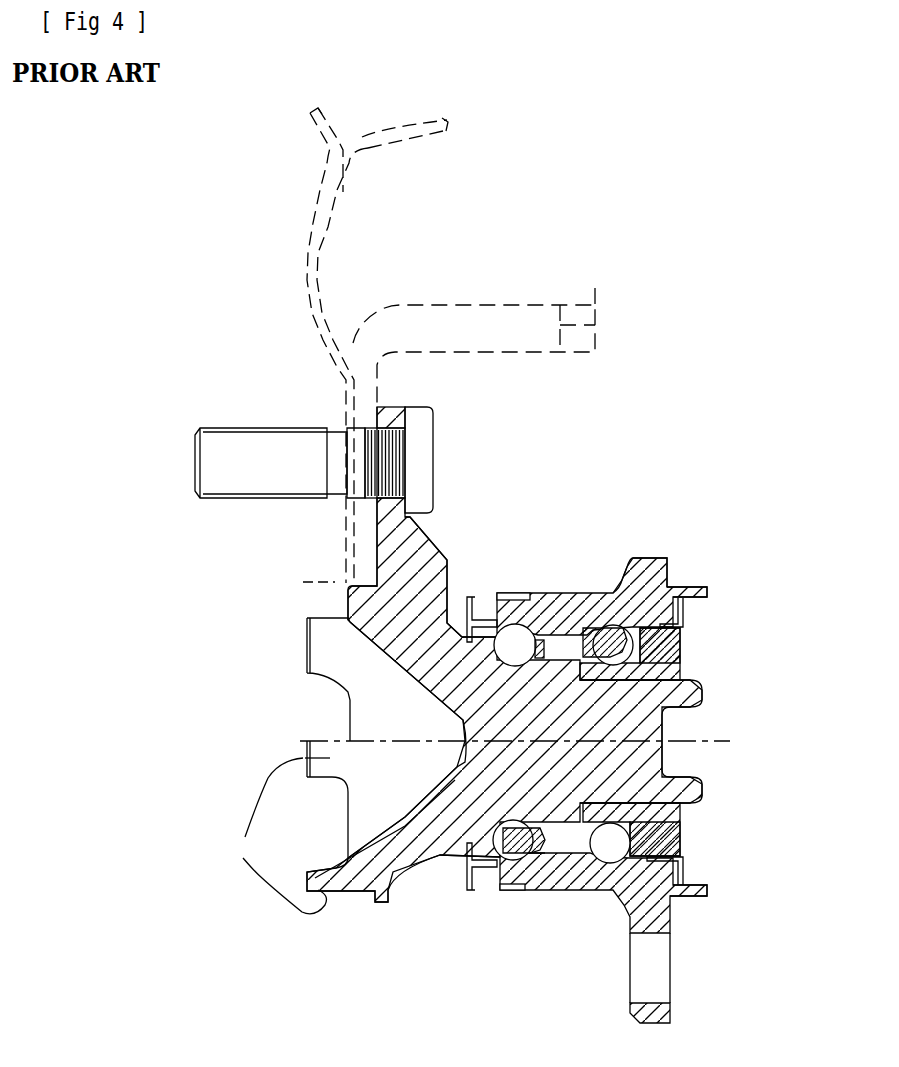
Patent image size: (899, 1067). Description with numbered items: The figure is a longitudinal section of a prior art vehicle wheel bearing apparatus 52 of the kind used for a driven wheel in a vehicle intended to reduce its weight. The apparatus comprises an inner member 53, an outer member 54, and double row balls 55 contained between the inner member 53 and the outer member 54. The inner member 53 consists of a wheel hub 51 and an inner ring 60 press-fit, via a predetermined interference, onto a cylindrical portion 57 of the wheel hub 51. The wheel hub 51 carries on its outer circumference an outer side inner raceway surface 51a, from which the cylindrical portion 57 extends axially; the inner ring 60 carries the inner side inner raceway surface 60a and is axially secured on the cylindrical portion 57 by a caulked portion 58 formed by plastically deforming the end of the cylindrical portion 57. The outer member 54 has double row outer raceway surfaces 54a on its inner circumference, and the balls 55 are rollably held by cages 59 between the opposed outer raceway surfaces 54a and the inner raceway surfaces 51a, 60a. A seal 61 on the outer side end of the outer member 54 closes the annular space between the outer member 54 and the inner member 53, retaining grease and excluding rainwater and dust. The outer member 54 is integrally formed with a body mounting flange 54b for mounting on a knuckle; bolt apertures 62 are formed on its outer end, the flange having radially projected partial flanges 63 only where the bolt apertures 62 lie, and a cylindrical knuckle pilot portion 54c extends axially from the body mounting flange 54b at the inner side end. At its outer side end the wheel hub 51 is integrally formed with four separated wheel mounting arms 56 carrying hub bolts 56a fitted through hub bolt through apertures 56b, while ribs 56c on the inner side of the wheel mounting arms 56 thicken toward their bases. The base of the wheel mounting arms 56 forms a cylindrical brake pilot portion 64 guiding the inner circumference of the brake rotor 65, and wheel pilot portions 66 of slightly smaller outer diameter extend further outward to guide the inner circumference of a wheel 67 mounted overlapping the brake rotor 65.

The wheel hub 51 is at (400, 630).
The outer side inner raceway surface 51a is at (435, 688).
The wheel bearing apparatus 52 is at (612, 525).
The inner member 53 is at (415, 805).
The outer member 54 is at (552, 600).
The outer raceway surfaces 54a is at (513, 630).
The body mounting flange 54b is at (643, 570).
The knuckle pilot portion 54c is at (700, 588).
The balls 55 is at (600, 858).
The wheel mounting arms 56 is at (410, 410).
The hub bolts 56a is at (237, 437).
The through aperture for hub bolt 56b is at (397, 442).
The rib 56c is at (440, 538).
The cylindrical portion 57 is at (697, 715).
The caulked portion 58 is at (683, 670).
The cages 59 is at (597, 660).
The inner ring 60 is at (672, 648).
The inner side inner raceway surface 60a is at (617, 833).
The seal 61 is at (465, 857).
The bolt apertures 62 is at (653, 937).
The partial flanges 63 is at (675, 1013).
The brake pilot portion 64 is at (362, 583).
The brake rotor 65 is at (436, 306).
The wheel pilot portions 66 is at (269, 836).
The wheel 67 is at (312, 270).